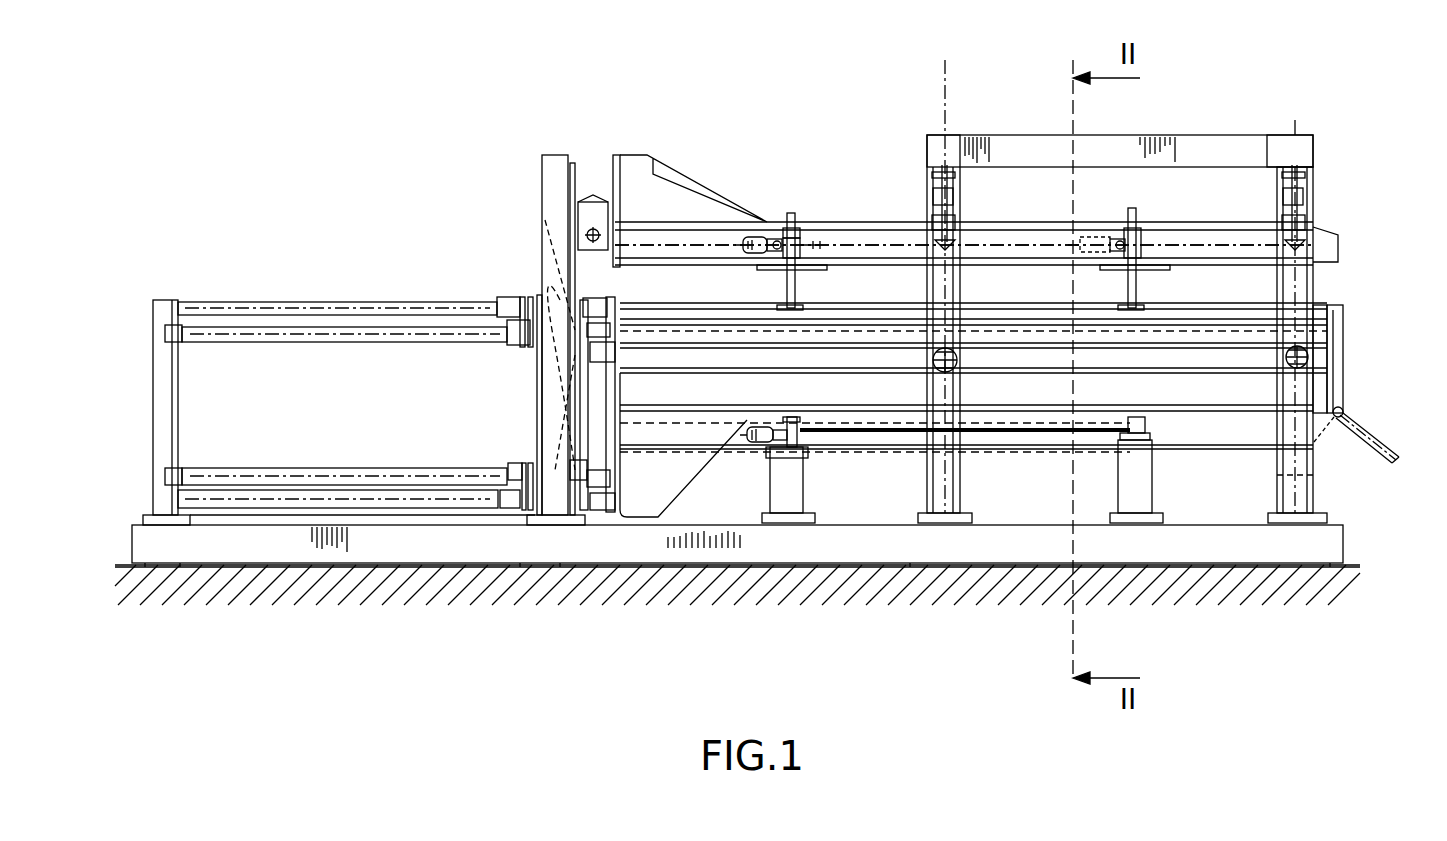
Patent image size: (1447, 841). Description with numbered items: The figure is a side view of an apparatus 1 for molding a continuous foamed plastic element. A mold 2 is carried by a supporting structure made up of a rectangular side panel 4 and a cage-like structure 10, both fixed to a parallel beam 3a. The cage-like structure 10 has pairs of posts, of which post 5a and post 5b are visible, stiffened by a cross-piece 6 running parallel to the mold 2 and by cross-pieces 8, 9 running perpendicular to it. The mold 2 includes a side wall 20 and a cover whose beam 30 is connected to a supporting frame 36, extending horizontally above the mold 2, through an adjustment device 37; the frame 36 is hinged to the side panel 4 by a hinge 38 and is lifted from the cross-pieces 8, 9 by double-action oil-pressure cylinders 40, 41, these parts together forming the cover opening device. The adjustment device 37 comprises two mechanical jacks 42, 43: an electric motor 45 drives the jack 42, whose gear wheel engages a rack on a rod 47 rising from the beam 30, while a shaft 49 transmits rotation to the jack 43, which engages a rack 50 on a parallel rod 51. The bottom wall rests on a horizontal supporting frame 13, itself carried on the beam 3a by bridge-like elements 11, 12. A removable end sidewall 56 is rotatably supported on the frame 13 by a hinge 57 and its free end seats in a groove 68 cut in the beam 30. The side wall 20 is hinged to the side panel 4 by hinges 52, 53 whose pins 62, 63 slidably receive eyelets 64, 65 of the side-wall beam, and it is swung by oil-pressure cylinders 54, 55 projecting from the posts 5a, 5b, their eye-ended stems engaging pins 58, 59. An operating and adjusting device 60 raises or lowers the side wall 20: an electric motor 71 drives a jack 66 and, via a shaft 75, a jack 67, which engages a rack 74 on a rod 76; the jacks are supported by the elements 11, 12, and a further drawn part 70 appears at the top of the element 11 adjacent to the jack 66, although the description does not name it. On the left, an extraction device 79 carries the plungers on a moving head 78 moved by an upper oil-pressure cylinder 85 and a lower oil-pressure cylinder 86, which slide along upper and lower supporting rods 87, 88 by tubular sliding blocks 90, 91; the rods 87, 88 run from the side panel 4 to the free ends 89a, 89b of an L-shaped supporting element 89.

The apparatus 1 is at (365, 158).
The mold 2 is at (1362, 302).
The beam 3a is at (432, 545).
The side panel 4 is at (543, 250).
The post 5a is at (940, 523).
The post 5b is at (1315, 470).
The cross-piece 6 is at (1172, 135).
The cross-piece 8 is at (940, 277).
The cross-piece 9 is at (1305, 145).
The cage-like structure 10 is at (1214, 100).
The bridge-like supporting element 11 is at (786, 490).
The bridge-like supporting element 12 is at (1135, 500).
The horizontal supporting frame 13 is at (862, 442).
The side wall 20 is at (660, 485).
The beam 30 is at (840, 318).
The supporting frame 36 is at (853, 220).
The adjustment device 37 is at (760, 205).
The hinge 38 is at (592, 226).
The oil-pressure cylinder 40 is at (958, 197).
The oil-pressure cylinder 41 is at (1310, 197).
The mechanical jack 42 is at (805, 240).
The mechanical jack 43 is at (1140, 240).
The electric motor 45 is at (748, 236).
The rod 47 is at (785, 212).
The shaft 49 is at (1025, 243).
The rack 50 is at (1128, 290).
The rod 51 is at (1135, 228).
The hinge 52 is at (605, 515).
The hinge 53 is at (612, 285).
The oil-pressure cylinder 54 is at (952, 372).
The oil-pressure cylinder 55 is at (1290, 370).
The sidewall 56 is at (1340, 390).
The hinge 57 is at (1343, 413).
The pin 58 is at (940, 372).
The pin 59 is at (1308, 352).
The operating and adjusting device 60 is at (1045, 512).
The pin 62 is at (572, 465).
The pin 63 is at (585, 298).
The eyelet 64 is at (590, 352).
The eyelet 65 is at (590, 527).
The mechanical jack 66 is at (798, 440).
The mechanical jack 67 is at (1118, 436).
The groove 68 is at (1340, 304).
The pedestal cap 70 is at (770, 445).
The electric motor 71 is at (750, 443).
The rack 74 is at (1152, 445).
The shaft 75 is at (1040, 434).
The rod 76 is at (1148, 425).
The moving head 78 is at (545, 370).
The extraction device 79 is at (360, 280).
The upper oil-pressure cylinder 85 is at (368, 343).
The lower oil-pressure cylinder 86 is at (262, 467).
The upper supporting rod 87 is at (248, 300).
The lower supporting rod 88 is at (292, 520).
The L-shaped supporting element 89 is at (152, 415).
The free end of L-shaped element 89a is at (160, 300).
The free end of L-shaped element 89b is at (155, 500).
The tubular sliding block 90 is at (500, 296).
The tubular sliding block 91 is at (515, 528).